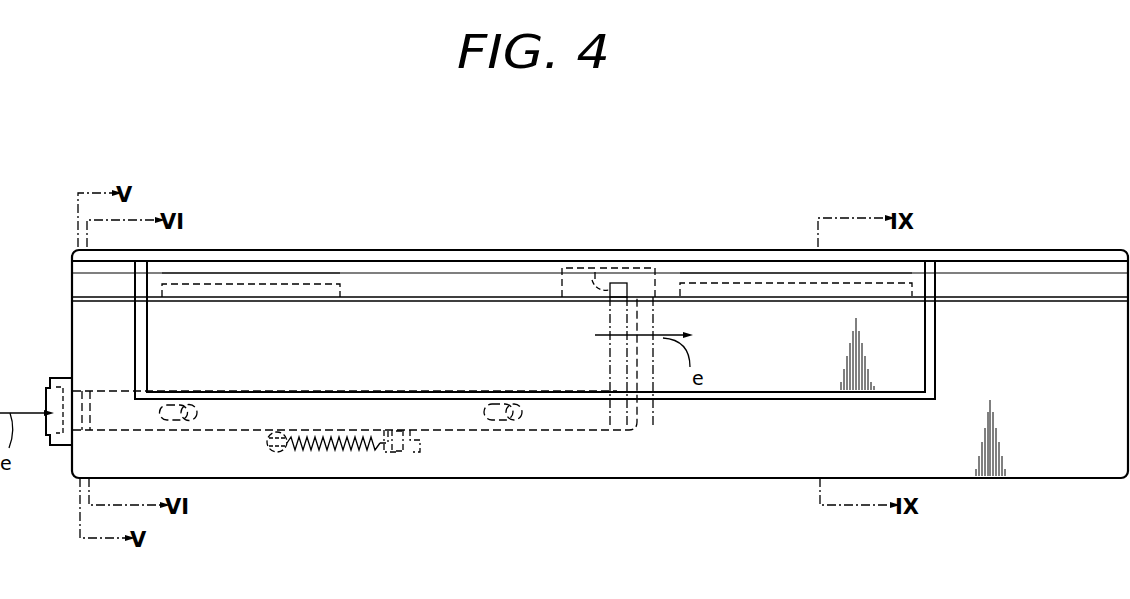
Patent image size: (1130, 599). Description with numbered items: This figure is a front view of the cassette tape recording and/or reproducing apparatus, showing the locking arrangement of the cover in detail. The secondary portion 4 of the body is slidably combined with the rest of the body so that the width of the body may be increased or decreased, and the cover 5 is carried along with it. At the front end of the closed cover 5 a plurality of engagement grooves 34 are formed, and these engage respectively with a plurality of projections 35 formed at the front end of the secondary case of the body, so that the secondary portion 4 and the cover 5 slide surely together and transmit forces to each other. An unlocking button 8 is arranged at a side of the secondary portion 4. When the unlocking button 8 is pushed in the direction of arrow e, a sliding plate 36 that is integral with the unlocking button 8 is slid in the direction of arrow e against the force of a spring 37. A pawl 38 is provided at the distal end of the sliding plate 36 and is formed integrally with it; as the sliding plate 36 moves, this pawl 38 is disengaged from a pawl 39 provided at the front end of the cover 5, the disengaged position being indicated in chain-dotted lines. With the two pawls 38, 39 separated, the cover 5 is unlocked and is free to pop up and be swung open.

The secondary portion of the body 4 is at (1068, 462).
The cover 5 is at (1075, 262).
The unlocking button 8 is at (47, 427).
The engagement grooves 34 is at (283, 288).
The projections 35 is at (250, 287).
The sliding plate 36 is at (460, 425).
The spring 37 is at (331, 452).
The pawl 38 is at (618, 278).
The pawl 39 is at (596, 286).